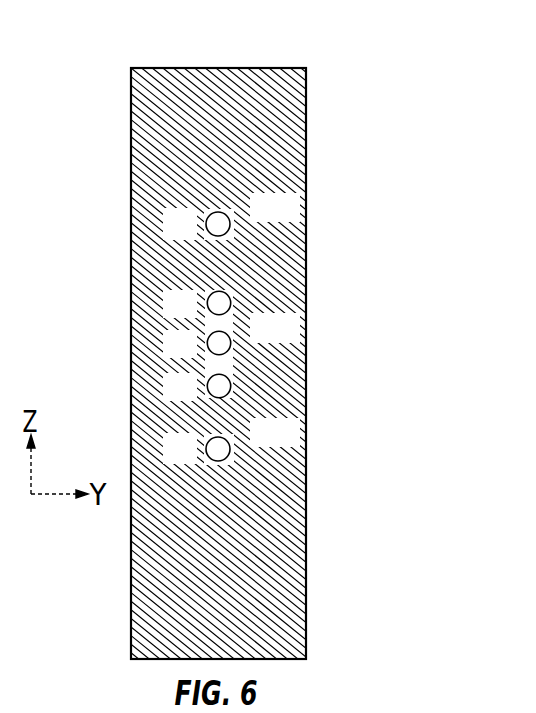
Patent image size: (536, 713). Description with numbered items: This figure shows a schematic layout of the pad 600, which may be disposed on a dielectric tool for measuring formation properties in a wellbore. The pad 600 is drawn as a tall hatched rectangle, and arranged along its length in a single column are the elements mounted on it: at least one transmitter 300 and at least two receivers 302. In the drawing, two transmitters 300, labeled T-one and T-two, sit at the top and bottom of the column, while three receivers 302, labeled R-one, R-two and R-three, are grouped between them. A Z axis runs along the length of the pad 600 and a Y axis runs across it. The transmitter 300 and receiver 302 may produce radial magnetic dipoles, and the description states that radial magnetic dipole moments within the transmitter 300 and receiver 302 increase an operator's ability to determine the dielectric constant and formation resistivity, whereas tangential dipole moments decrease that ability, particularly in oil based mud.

The pad 600 is at (218, 68).
The transmitter 300 is at (218, 224).
The receiver 302 is at (219, 386).